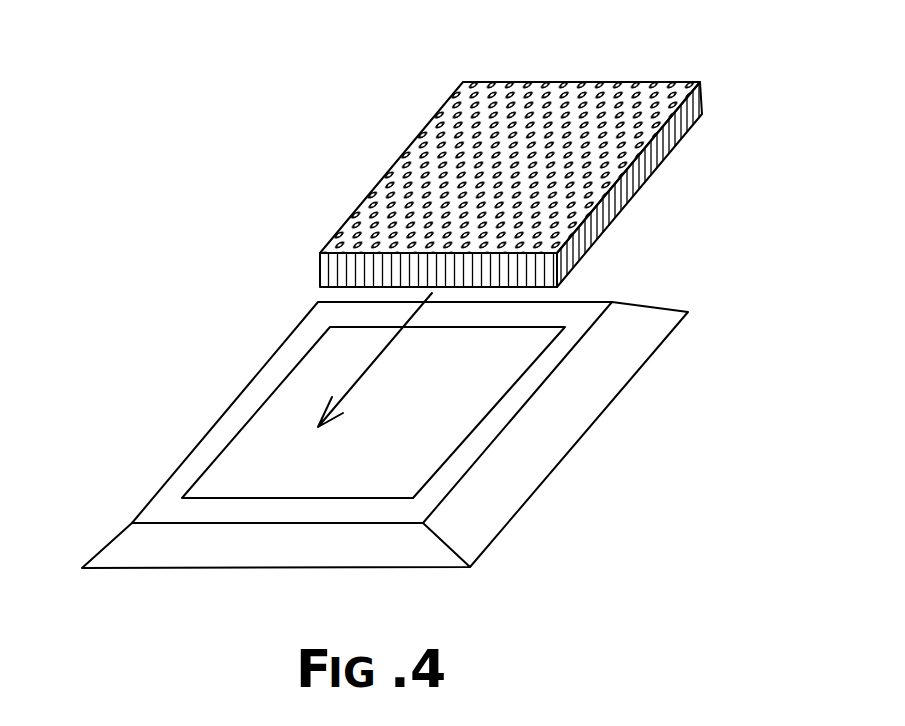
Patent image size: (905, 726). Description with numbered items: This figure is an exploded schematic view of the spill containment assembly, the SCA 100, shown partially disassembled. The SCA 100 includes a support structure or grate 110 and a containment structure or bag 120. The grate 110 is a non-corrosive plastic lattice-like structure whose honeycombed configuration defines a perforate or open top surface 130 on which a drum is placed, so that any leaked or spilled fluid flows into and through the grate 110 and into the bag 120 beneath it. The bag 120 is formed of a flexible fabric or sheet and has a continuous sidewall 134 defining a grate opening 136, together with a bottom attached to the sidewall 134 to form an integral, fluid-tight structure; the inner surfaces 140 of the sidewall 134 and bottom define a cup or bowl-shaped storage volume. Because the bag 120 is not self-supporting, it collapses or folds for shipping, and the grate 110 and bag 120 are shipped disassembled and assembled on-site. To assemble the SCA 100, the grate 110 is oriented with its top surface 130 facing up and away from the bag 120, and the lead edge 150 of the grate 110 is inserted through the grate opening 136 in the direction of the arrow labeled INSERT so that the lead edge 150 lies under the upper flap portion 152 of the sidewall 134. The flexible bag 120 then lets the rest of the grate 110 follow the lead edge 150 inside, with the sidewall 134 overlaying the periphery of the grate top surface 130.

The SCA 100 is at (208, 213).
The grate 110 is at (667, 80).
The top surface 130 is at (528, 115).
The lead edge 150 is at (320, 273).
The bag 120 is at (670, 307).
The sidewall 134 is at (502, 488).
The grate opening 136 is at (490, 407).
The inner surfaces 140 is at (367, 482).
The upper flap portion 152 is at (293, 510).